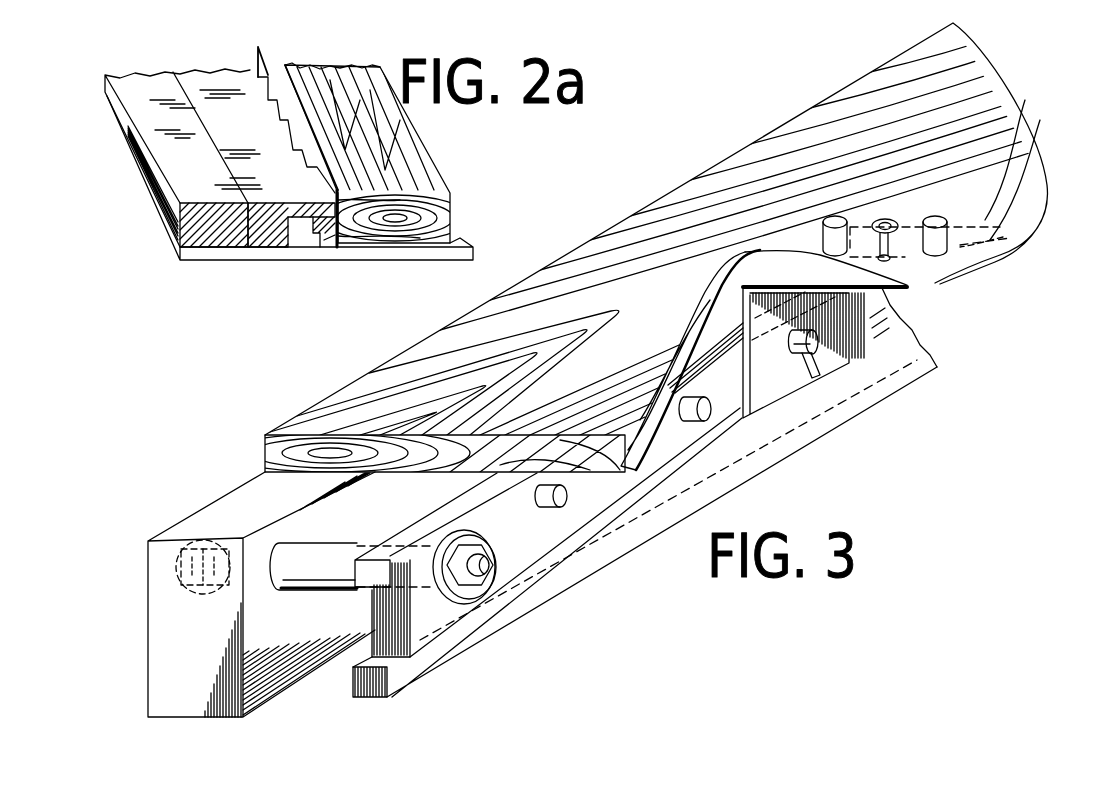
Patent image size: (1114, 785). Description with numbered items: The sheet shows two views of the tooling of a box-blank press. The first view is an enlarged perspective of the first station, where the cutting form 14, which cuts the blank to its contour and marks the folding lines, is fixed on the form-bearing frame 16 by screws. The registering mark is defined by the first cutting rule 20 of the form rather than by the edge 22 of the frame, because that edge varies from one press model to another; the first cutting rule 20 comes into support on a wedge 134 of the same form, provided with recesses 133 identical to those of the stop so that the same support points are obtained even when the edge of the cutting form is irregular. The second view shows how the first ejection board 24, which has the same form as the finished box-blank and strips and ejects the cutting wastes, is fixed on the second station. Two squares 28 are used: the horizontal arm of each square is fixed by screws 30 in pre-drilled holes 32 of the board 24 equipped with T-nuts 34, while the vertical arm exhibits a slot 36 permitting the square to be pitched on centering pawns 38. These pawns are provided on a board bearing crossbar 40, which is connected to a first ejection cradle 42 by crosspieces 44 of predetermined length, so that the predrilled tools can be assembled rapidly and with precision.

In FIG. 2a, the cutting form 14 is at (437, 212).
In FIG. 2a, the form-bearing frame 16 is at (447, 252).
In FIG. 2a, the first cutting rule 20 is at (262, 56).
In FIG. 2a, the edge of the frame 22 is at (220, 237).
In FIG. 2a, the recesses 133 is at (277, 110).
In FIG. 2a, the wedge 134 is at (263, 238).
In FIG. 3, the first ejection board 24 is at (1035, 182).
In FIG. 3, the squares 28 is at (897, 300).
In FIG. 3, the screws 30 is at (950, 283).
In FIG. 3, the pre-drilled holes 32 is at (1003, 237).
In FIG. 3, the T-nuts 34 is at (905, 222).
In FIG. 3, the slot 36 is at (795, 355).
In FIG. 3, the centering pawns 38 is at (537, 508).
In FIG. 3, the board bearing crossbar 40 is at (563, 578).
In FIG. 3, the first ejection cradle 42 is at (155, 665).
In FIG. 3, the crosspieces 44 is at (324, 589).